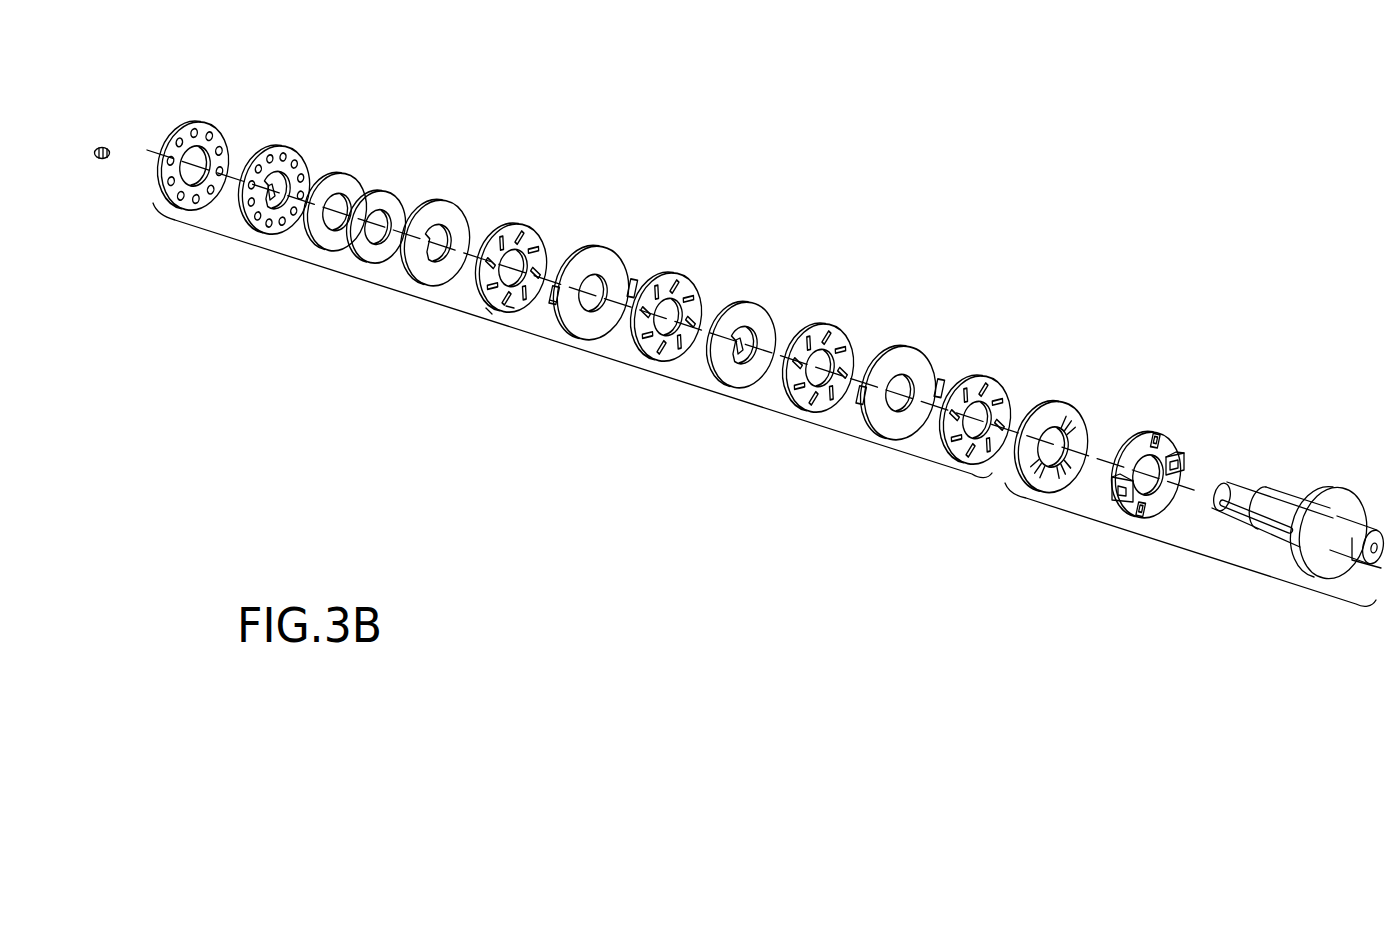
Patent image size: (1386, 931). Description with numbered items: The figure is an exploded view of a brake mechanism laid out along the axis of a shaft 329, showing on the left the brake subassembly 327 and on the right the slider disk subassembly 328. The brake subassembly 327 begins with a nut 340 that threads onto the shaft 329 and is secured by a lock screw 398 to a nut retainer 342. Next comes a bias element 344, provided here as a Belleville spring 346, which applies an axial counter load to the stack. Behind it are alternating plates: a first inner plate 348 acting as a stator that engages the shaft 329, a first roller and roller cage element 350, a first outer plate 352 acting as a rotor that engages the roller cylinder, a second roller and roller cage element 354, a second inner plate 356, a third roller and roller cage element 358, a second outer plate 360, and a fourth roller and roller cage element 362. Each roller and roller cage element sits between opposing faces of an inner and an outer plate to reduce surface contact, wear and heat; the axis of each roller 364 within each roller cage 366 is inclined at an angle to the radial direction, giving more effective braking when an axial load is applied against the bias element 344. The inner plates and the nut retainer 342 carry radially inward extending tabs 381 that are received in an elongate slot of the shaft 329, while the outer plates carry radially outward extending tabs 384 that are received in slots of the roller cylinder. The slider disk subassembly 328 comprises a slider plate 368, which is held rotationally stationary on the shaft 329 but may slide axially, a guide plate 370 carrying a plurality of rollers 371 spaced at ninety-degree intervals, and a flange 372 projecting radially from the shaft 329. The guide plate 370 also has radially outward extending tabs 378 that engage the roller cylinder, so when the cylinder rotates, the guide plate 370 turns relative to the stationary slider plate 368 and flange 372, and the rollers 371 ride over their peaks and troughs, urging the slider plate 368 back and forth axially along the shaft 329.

The brake subassembly 327 is at (617, 363).
The slider disk subassembly 328 is at (1157, 543).
The shaft 329 is at (1268, 493).
The nut 340 is at (205, 121).
The nut retainer 342 is at (284, 147).
The bias element 344 is at (342, 140).
The Belleville spring 346 is at (390, 190).
The first inner plate 348 is at (445, 200).
The first roller and roller cage element 350 is at (520, 226).
The first outer plate 352 is at (601, 248).
The second roller and roller cage element 354 is at (675, 275).
The second inner plate 356 is at (750, 304).
The third roller and roller cage element 358 is at (827, 326).
The second outer plate 360 is at (904, 348).
The fourth roller and roller cage element 362 is at (982, 378).
The roller 364 is at (488, 312).
The roller cage 366 is at (510, 308).
The slider plate 368 is at (1058, 405).
The guide plate 370 is at (1176, 446).
The rollers 371 is at (1149, 434).
The flange 372 is at (1340, 497).
The radially outward extending tabs 378 is at (1184, 458).
The radially inward extending tabs 381 is at (270, 207).
The radially outward extending tabs 384 is at (552, 317).
The lock screw 398 is at (106, 159).